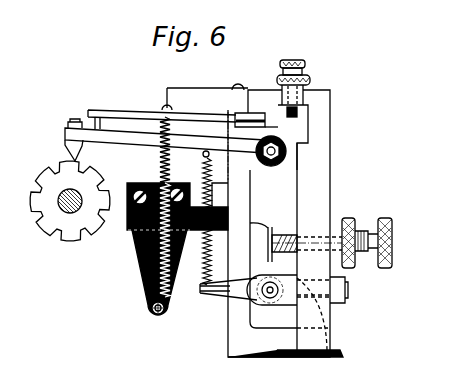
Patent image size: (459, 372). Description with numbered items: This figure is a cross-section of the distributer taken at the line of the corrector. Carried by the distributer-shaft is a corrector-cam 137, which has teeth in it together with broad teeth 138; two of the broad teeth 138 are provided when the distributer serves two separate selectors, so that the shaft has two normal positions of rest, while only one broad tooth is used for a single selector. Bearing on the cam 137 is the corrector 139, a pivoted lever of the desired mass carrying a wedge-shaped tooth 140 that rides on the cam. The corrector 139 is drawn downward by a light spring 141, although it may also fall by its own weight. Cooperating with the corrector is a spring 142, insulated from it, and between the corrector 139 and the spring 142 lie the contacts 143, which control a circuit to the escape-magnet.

The corrector-cam 137 is at (50, 178).
The broad teeth 138 is at (72, 234).
The corrector 139 is at (131, 141).
The wedge-shaped tooth 140 is at (66, 153).
The light spring 141 is at (197, 282).
The spring 142 is at (124, 112).
The contacts 143 is at (100, 123).